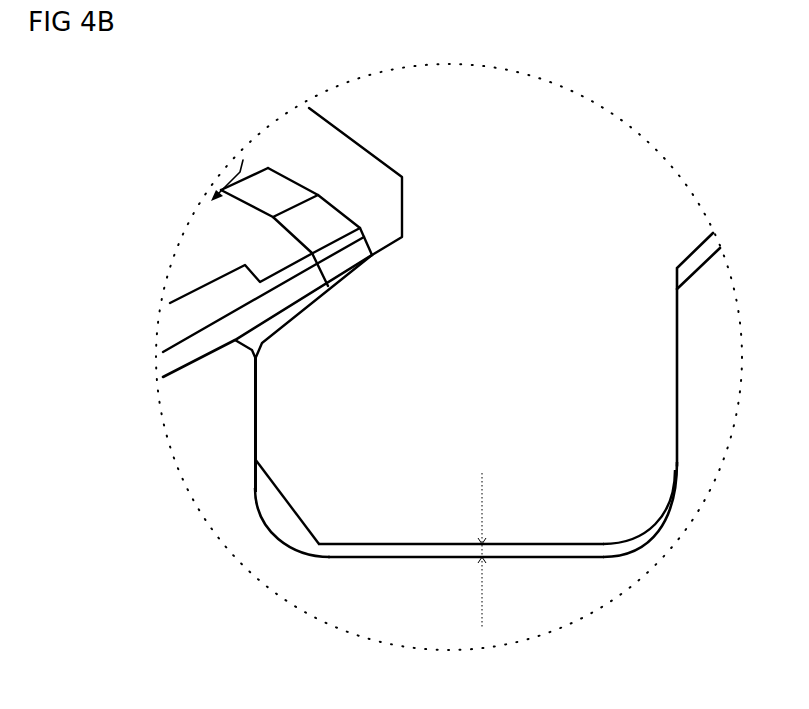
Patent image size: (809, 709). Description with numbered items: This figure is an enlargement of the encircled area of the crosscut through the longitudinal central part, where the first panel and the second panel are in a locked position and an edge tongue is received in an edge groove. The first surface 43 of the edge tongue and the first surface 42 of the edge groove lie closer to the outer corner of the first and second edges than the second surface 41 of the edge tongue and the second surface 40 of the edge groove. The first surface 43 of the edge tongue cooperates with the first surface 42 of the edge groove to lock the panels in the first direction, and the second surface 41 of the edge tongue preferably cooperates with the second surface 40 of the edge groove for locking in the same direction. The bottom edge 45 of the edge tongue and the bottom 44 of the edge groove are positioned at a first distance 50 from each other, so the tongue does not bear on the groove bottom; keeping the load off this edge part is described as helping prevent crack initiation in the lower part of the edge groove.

The second surface of the edge groove 40 is at (255, 403).
The second surface of the edge tongue 41 is at (255, 403).
The first surface of the edge groove 42 is at (677, 342).
The first surface of the edge tongue 43 is at (677, 362).
The bottom 44 is at (397, 557).
The bottom edge 45 is at (408, 543).
The first distance 50 is at (499, 550).